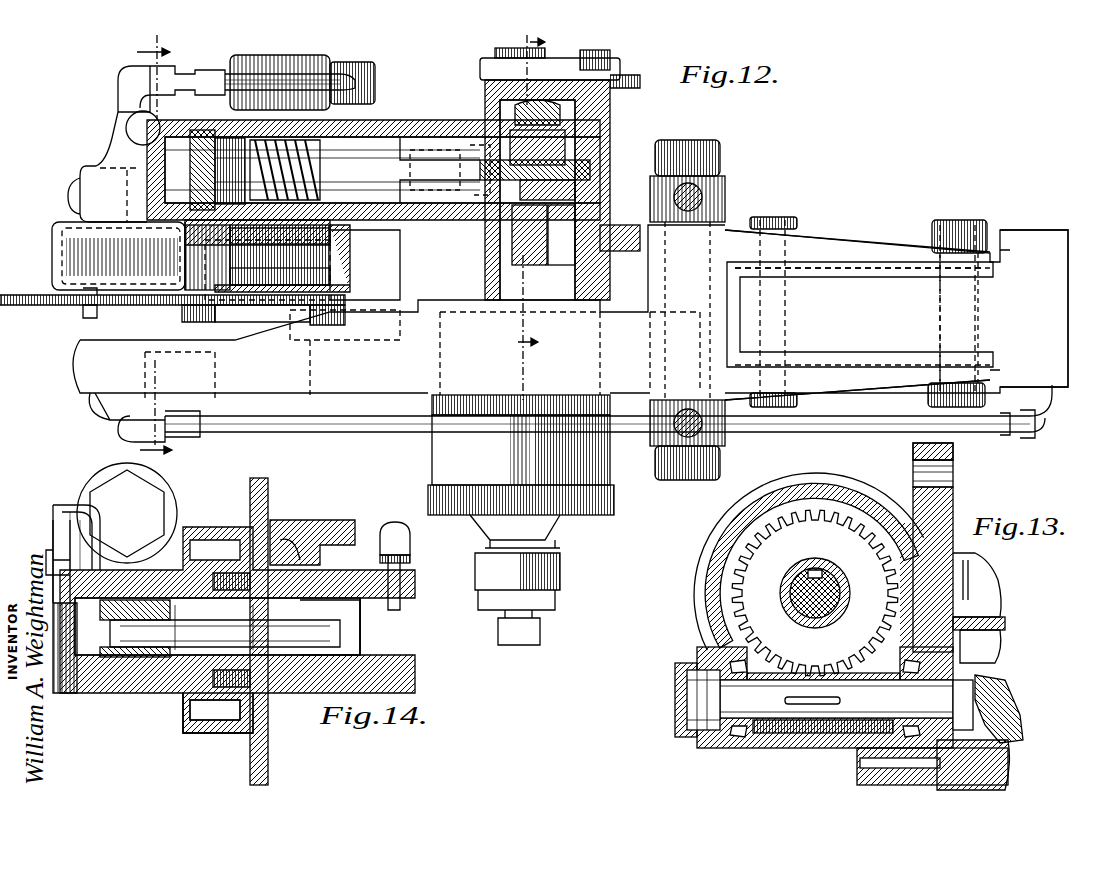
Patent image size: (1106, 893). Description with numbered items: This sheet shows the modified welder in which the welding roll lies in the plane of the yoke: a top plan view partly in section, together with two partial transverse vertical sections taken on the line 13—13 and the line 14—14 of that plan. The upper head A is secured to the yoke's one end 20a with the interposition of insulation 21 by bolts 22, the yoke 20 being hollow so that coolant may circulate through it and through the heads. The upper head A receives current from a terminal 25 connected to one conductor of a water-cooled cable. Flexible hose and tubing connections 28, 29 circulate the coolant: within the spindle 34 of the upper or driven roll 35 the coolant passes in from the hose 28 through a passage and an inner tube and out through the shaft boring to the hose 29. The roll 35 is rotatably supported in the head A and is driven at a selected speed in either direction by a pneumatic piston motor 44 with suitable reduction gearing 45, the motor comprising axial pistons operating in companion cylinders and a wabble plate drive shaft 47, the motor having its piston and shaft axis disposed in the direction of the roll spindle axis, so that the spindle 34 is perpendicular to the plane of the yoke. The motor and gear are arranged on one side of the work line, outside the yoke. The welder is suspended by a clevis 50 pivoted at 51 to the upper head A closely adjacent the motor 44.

In FIG. 12, the section line 13— 13 is at (516, 215).
In FIG. 12, the section line 14— 14 is at (139, 248).
In FIG. 12, the yoke 20 is at (1068, 276).
In FIG. 12, the yoke's one end 20a is at (840, 262).
In FIG. 12, the insulation 21 is at (820, 262).
In FIG. 12, the bolts 22 is at (958, 222).
In FIG. 12, the terminal 25 is at (955, 450).
In FIG. 13, the terminal 25 is at (975, 451).
In FIG. 12, the flexible hose connection 28 is at (350, 76).
In FIG. 14, the flexible hose connection 28 is at (55, 505).
In FIG. 12, the flexible hose connection 29 is at (370, 432).
In FIG. 14, the flexible hose connection 29 is at (390, 522).
In FIG. 14, the spindle 34 is at (292, 560).
In FIG. 12, the upper or driven roll 35 is at (38, 300).
In FIG. 14, the upper or driven roll 35 is at (268, 772).
In FIG. 12, the pneumatic piston motor 44 is at (585, 495).
In FIG. 12, the reduction gearing 45 is at (320, 258).
In FIG. 13, the reduction gearing 45 is at (755, 620).
In FIG. 14, the reduction gearing 45 is at (225, 720).
In FIG. 12, the wabble plate drive shaft 47 is at (480, 260).
In FIG. 13, the wabble plate drive shaft 47 is at (860, 708).
In FIG. 12, the clevis 50 is at (703, 199).
In FIG. 12, the pivot 51 is at (700, 138).
In FIG. 12, the upper head A is at (300, 398).
In FIG. 13, the upper head A is at (1006, 608).
In FIG. 14, the upper head A is at (172, 732).